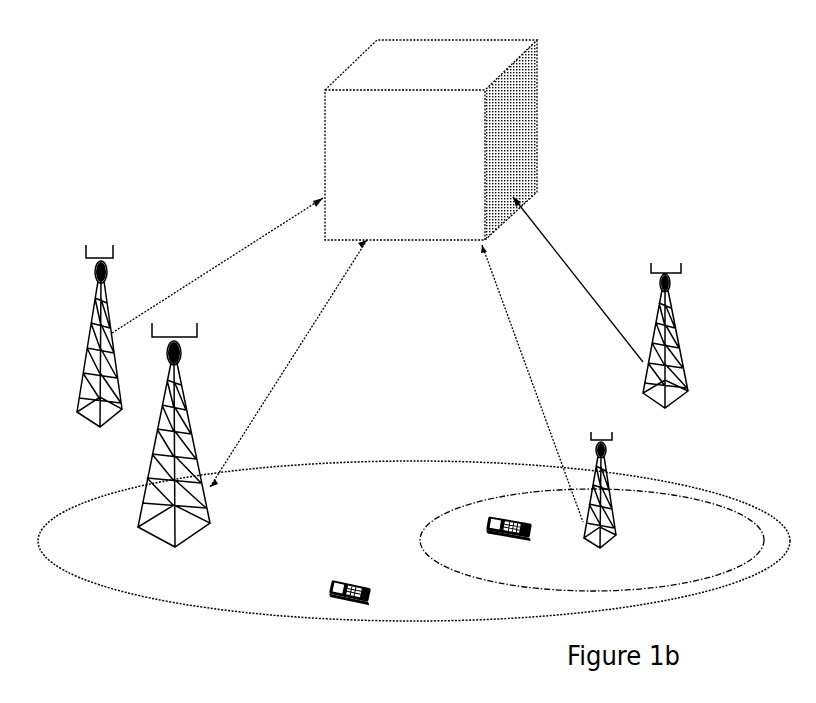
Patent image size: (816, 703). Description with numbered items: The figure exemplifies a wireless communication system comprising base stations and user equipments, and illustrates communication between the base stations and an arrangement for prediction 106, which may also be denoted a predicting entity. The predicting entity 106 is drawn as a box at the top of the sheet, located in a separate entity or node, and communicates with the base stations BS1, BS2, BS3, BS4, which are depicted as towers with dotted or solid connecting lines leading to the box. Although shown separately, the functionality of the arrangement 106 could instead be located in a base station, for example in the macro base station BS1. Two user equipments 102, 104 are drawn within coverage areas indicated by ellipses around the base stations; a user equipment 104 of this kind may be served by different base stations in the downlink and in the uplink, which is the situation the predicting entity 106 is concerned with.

The arrangement for prediction 106 is at (413, 64).
The user equipment / wireless device 102 is at (346, 598).
The user equipment 104 is at (507, 535).
The macro base station BS1 is at (193, 402).
The base station BS2 is at (660, 530).
The base station BS3 is at (116, 254).
The base station BS4 is at (676, 271).